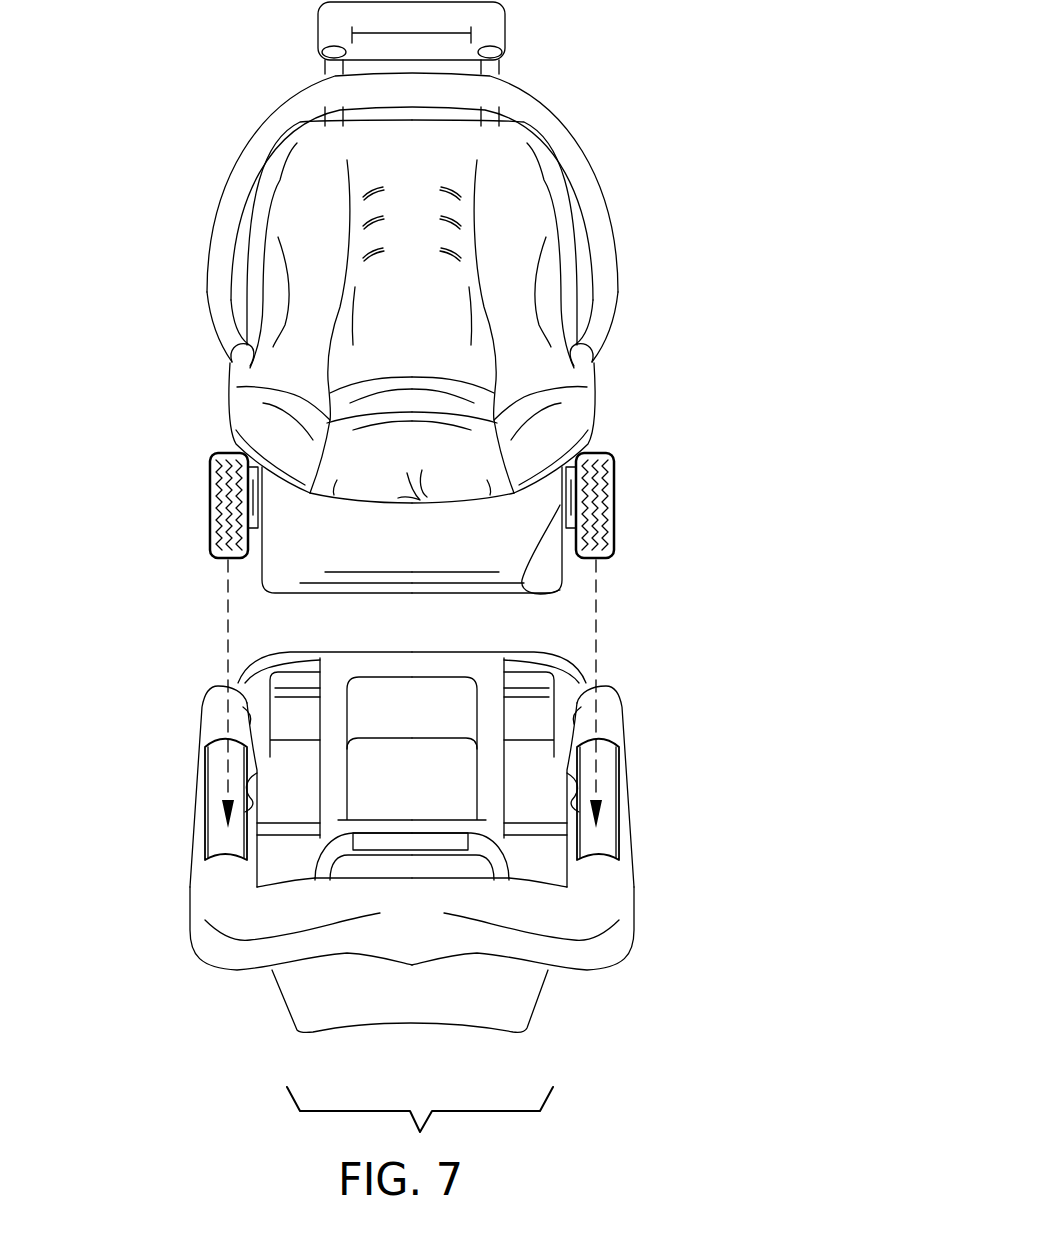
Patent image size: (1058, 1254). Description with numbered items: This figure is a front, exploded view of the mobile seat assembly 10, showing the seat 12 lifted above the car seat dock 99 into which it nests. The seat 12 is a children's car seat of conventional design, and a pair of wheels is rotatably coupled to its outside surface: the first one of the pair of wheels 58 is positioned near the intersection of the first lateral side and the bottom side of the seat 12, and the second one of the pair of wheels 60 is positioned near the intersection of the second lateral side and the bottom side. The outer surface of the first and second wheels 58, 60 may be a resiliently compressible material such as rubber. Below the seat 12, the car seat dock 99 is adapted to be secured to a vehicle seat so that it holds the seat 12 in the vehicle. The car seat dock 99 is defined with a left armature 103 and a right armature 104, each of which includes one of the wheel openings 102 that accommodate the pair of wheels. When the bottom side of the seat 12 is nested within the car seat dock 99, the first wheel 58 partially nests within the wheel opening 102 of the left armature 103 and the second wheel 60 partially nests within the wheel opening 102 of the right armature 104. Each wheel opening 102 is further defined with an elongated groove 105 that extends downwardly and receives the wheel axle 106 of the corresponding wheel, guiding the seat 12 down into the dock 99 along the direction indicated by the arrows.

The mobile seat assembly 10 is at (666, 100).
The seat 12 is at (228, 176).
The first one of the pair of wheels 58 is at (613, 495).
The second one of the pair of wheels 60 is at (210, 495).
The car seat dock 99 is at (540, 990).
The wheel openings 102 is at (208, 790).
The left armature 103 is at (623, 892).
The right armature 104 is at (191, 847).
The elongated groove 105 is at (572, 794).
The wheel axle 106 is at (562, 592).